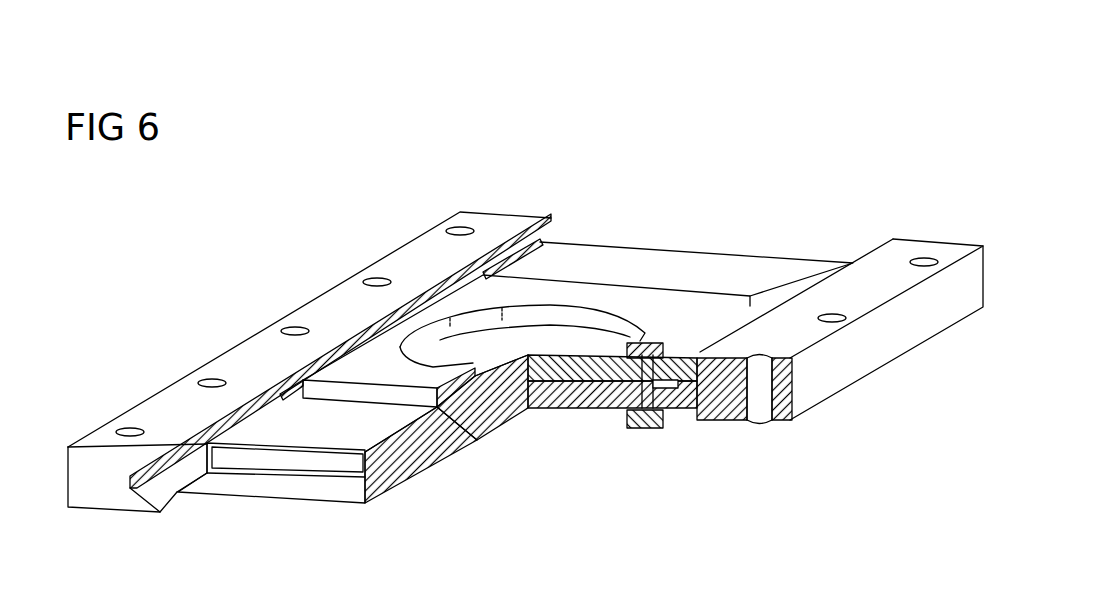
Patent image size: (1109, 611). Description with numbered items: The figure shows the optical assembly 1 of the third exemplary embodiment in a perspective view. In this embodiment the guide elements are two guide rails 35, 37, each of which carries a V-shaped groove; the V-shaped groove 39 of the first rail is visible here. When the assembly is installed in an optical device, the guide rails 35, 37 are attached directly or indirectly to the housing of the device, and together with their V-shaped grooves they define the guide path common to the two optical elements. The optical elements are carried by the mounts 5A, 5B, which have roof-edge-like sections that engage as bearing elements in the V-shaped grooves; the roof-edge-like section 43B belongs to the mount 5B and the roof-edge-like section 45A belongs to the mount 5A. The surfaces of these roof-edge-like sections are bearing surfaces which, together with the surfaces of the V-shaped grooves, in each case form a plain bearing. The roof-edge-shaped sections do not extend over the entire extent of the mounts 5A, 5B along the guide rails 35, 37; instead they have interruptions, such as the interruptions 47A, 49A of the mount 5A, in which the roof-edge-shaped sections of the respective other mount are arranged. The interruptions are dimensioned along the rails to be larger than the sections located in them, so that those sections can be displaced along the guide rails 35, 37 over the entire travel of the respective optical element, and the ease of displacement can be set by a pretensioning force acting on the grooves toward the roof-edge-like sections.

The sensor arrangement 1 is at (665, 149).
The guide rail 35 is at (496, 223).
The guide rail 37 is at (915, 244).
The mount 5A is at (287, 425).
The mount 5B is at (402, 477).
The V-shaped groove 39 is at (155, 492).
The roof-edge-like section 43B is at (180, 494).
The roof-edge-like section 45A is at (718, 406).
The interruption 47A is at (192, 457).
The interruption 49A is at (677, 363).